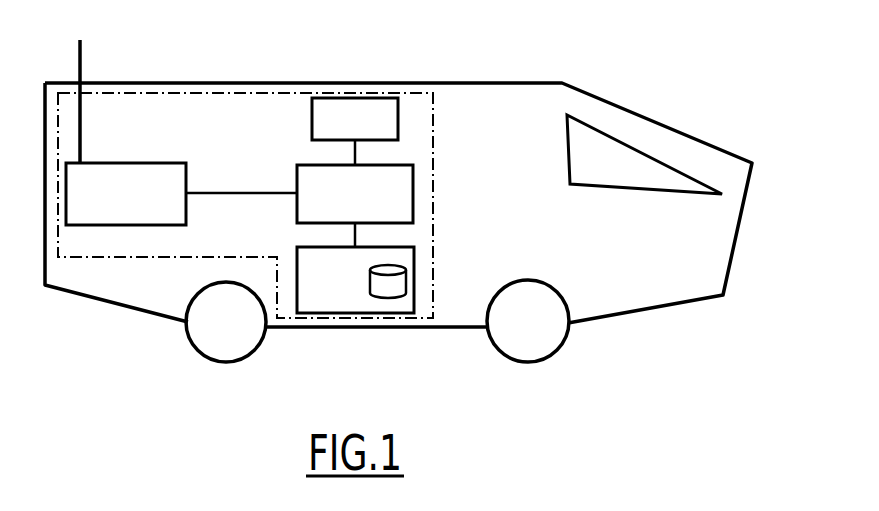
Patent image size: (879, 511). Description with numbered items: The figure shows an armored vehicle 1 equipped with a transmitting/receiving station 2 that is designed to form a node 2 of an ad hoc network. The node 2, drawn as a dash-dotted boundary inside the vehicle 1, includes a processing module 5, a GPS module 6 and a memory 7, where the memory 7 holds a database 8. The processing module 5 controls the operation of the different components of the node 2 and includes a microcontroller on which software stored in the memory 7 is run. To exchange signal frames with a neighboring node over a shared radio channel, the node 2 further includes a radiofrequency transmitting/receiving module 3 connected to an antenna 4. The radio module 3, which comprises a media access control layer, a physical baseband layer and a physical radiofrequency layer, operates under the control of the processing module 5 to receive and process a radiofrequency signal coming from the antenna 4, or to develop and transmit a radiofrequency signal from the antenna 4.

The armored vehicle 1 is at (731, 270).
The transmitting/receiving station 2 is at (433, 245).
The radiofrequency transmitting/receiving module 3 is at (173, 162).
The antenna 4 is at (80, 58).
The processing module 5 is at (413, 195).
The GPS module 6 is at (398, 118).
The memory 7 is at (407, 283).
The database 8 is at (390, 293).